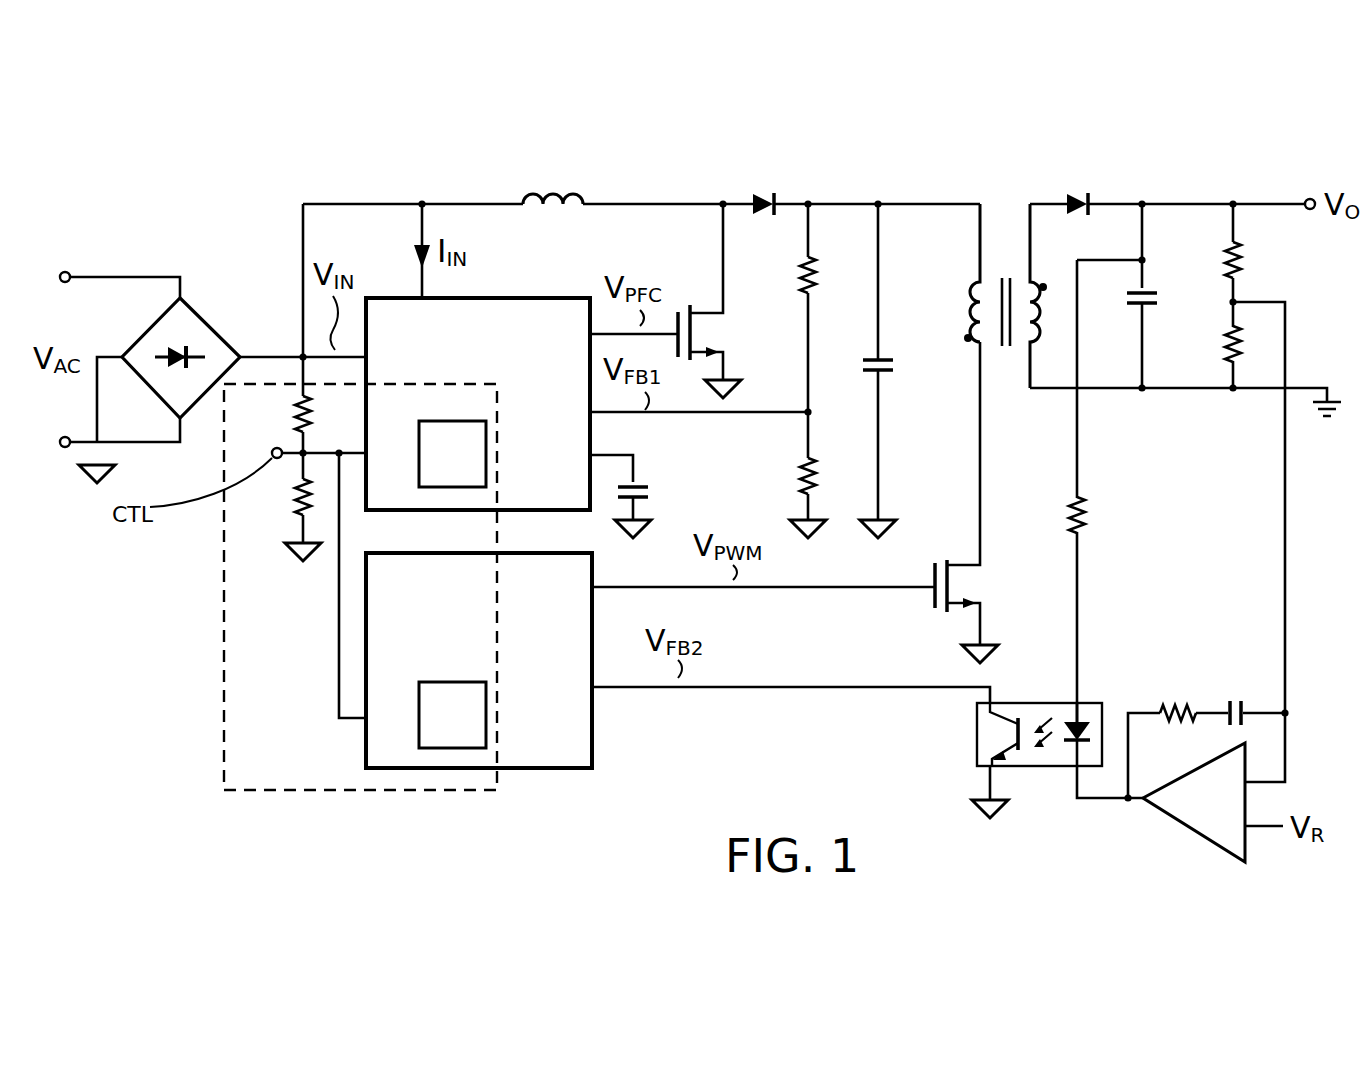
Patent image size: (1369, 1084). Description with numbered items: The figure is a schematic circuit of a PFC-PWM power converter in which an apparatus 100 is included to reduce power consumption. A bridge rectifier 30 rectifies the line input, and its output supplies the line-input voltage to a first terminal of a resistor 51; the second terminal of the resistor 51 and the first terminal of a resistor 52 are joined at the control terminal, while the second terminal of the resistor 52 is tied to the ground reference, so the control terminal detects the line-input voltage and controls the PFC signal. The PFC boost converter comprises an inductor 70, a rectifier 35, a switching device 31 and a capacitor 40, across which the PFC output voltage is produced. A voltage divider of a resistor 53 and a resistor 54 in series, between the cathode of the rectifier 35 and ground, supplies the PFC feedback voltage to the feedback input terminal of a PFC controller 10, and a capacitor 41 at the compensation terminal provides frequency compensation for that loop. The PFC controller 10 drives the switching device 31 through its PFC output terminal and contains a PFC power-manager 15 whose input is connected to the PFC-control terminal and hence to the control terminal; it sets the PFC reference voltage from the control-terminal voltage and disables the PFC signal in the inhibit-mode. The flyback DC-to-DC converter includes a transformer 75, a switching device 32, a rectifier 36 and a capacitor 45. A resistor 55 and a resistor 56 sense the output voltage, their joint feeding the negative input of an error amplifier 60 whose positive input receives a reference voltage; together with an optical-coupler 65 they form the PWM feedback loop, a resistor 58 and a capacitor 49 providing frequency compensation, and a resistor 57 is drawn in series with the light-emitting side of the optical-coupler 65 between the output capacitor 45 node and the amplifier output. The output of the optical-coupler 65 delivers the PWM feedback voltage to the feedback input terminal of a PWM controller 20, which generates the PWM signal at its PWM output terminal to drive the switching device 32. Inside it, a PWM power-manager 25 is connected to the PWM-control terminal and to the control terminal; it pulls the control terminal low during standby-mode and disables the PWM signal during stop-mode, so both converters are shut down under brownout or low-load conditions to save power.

The PFC controller 10 is at (478, 371).
The PFC power-manager 15 is at (488, 484).
The PWM controller 20 is at (479, 699).
The PWM power-manager 25 is at (488, 724).
The bridge rectifier 30 is at (200, 314).
The switching device 31 is at (718, 337).
The switching device 32 is at (980, 588).
The rectifier 35 is at (765, 198).
The rectifier 36 is at (1075, 198).
The capacitor 40 is at (895, 367).
The capacitor 41 is at (650, 495).
The capacitor 45 is at (1160, 305).
The capacitor 49 is at (1233, 701).
The resistor 51 is at (296, 418).
The resistor 52 is at (296, 510).
The resistor 53 is at (822, 273).
The resistor 54 is at (822, 479).
The resistor 55 is at (1248, 263).
The resistor 56 is at (1248, 351).
The bias resistor 57 is at (1093, 515).
The resistor 58 is at (1178, 701).
The error amplifier 60 is at (1190, 832).
The optical-coupler 65 is at (970, 737).
The inductor 70 is at (555, 198).
The transformer 75 is at (1004, 238).
The apparatus 100 is at (224, 735).